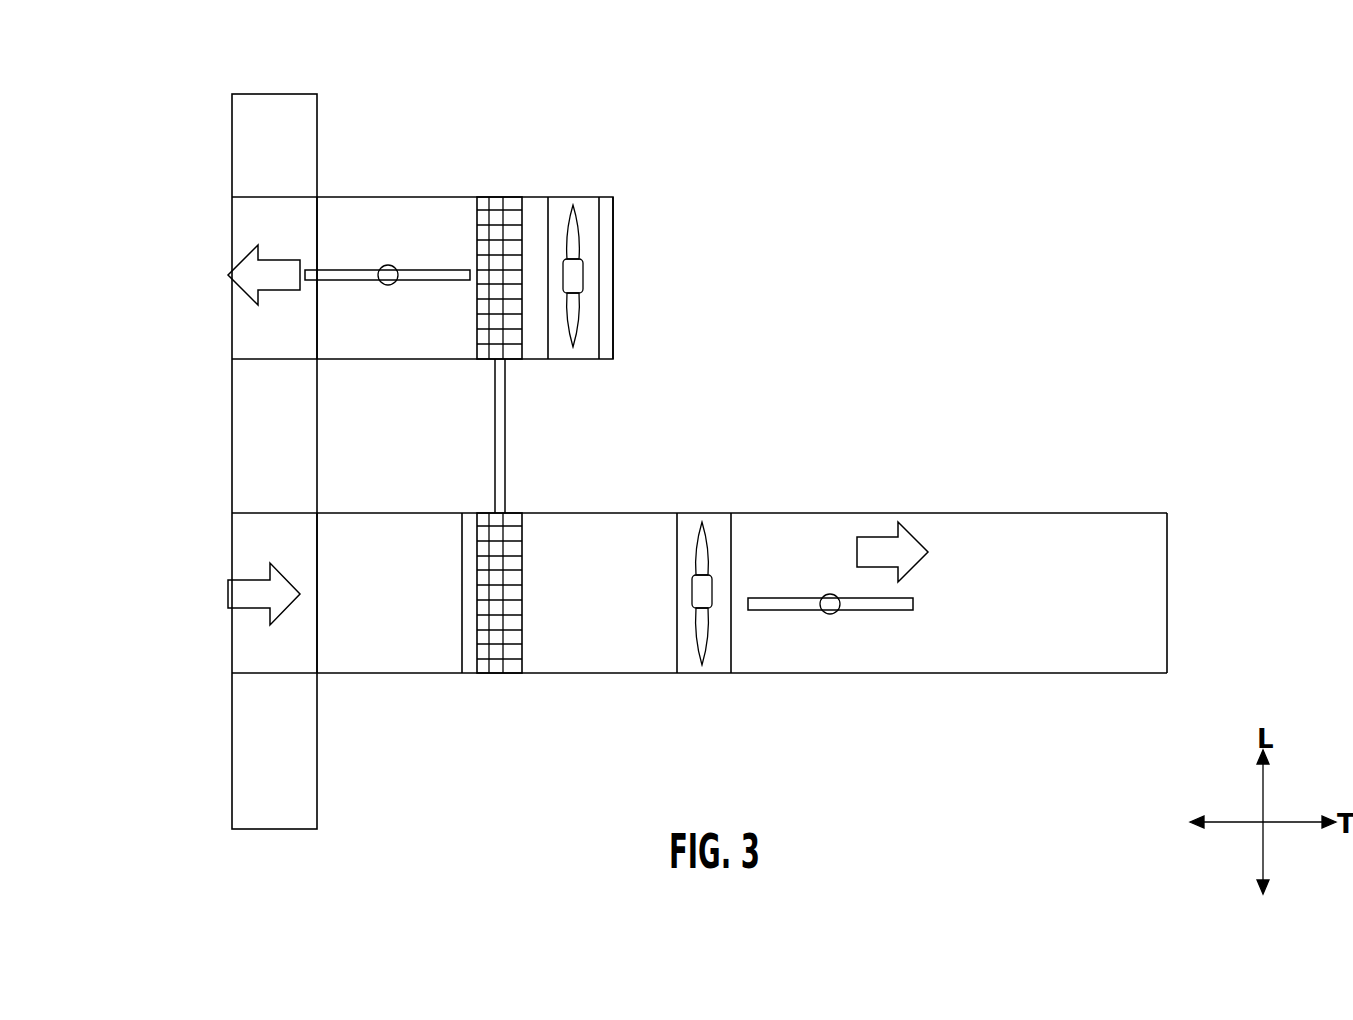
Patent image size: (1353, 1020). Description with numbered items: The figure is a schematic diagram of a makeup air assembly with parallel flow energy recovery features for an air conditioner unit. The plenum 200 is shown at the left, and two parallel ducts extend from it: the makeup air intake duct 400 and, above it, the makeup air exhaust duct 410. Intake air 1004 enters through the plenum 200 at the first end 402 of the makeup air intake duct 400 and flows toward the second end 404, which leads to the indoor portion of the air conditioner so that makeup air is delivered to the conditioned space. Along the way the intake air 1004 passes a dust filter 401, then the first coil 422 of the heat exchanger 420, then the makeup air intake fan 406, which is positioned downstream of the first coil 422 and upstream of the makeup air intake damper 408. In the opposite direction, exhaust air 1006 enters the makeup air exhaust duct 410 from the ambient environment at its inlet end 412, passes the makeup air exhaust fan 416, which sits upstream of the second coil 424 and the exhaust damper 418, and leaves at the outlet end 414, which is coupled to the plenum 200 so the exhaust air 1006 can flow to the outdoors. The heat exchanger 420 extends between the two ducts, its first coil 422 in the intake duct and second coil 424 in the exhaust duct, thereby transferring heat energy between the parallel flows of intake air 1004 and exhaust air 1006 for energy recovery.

The plenum 200 is at (275, 108).
The makeup air intake duct 400 is at (785, 528).
The dust filter 401 is at (465, 665).
The first end 402 is at (318, 655).
The second end 404 is at (1167, 555).
The makeup air intake fan 406 is at (688, 665).
The makeup air intake damper 408 is at (878, 606).
The makeup air exhaust duct 410 is at (400, 210).
The inlet end 412 is at (613, 255).
The outlet end 414 is at (318, 340).
The makeup air exhaust fan 416 is at (585, 350).
The exhaust damper 418 is at (336, 268).
The heat exchanger 420 is at (503, 427).
The first coil 422 is at (505, 670).
The second coil 424 is at (490, 197).
The intake air 1004 is at (250, 594).
The exhaust air 1006 is at (250, 278).